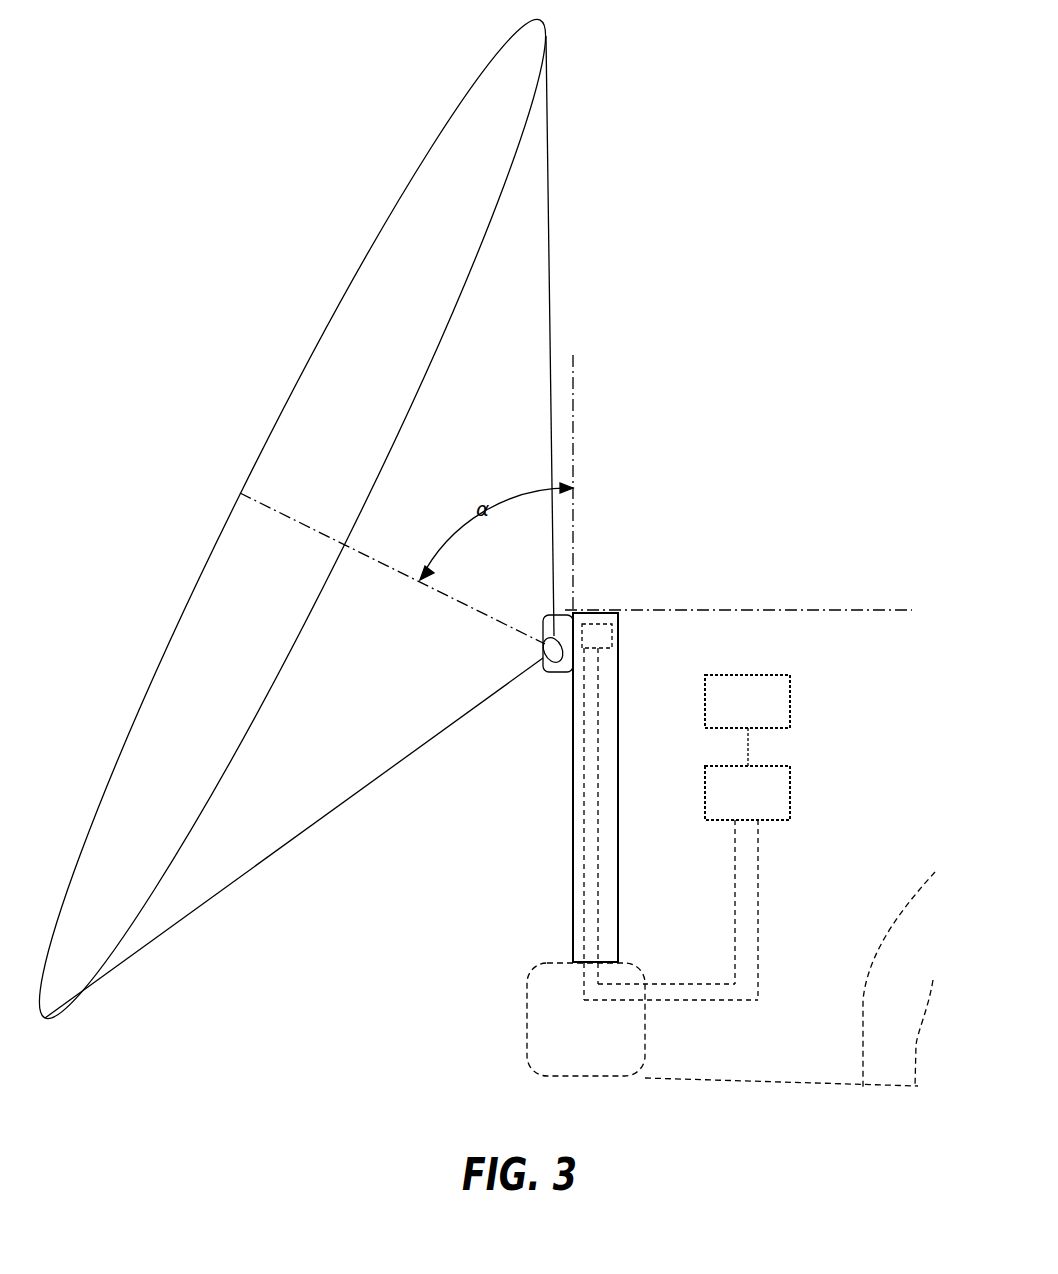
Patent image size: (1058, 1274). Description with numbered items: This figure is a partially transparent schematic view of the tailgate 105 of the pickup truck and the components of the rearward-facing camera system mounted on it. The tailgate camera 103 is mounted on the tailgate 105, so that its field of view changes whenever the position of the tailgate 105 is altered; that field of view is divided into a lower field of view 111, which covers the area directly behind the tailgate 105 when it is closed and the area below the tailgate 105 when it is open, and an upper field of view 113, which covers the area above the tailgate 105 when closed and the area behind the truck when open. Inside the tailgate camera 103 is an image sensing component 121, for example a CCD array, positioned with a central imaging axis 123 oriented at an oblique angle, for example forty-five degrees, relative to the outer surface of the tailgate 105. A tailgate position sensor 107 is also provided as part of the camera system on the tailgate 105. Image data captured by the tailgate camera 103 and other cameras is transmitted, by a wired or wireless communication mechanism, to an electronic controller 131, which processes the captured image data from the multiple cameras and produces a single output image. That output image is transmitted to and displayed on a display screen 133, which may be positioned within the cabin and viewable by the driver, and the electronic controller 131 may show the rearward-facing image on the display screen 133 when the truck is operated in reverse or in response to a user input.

The tailgate camera 103 is at (546, 624).
The tailgate 105 is at (622, 686).
The tailgate position sensor 107 is at (621, 633).
The lower field of view 111 is at (211, 667).
The upper field of view 113 is at (359, 357).
The image sensing component 121 is at (562, 675).
The central imaging axis 123 is at (463, 623).
The electronic controller 131 is at (731, 805).
The display screen 133 is at (731, 713).